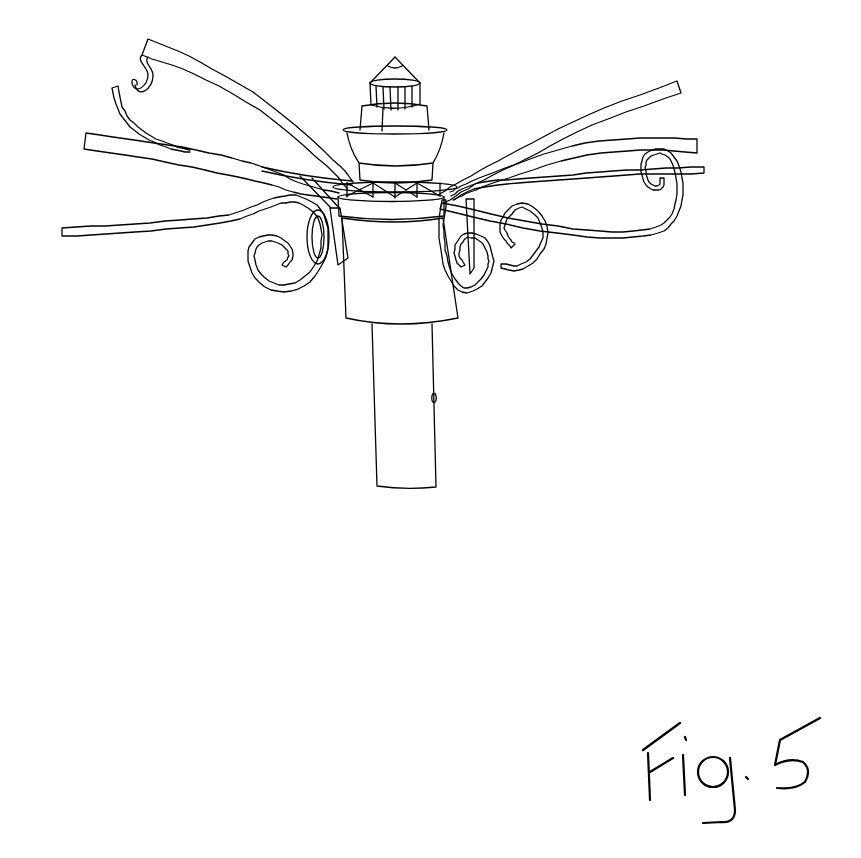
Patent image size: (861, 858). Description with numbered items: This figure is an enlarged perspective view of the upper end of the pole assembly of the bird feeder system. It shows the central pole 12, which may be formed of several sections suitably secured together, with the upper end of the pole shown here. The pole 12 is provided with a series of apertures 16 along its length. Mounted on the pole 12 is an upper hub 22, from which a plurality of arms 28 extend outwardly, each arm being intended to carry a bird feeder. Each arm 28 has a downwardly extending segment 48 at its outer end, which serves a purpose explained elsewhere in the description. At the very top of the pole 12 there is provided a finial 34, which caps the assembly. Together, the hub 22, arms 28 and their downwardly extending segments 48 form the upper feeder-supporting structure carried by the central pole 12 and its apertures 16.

The central pole 12 is at (435, 458).
The apertures 16 is at (437, 398).
The upper hub 22 is at (351, 344).
The arms 28 is at (243, 82).
The finial 34 is at (422, 105).
The downwardly extending segment 48 is at (638, 238).